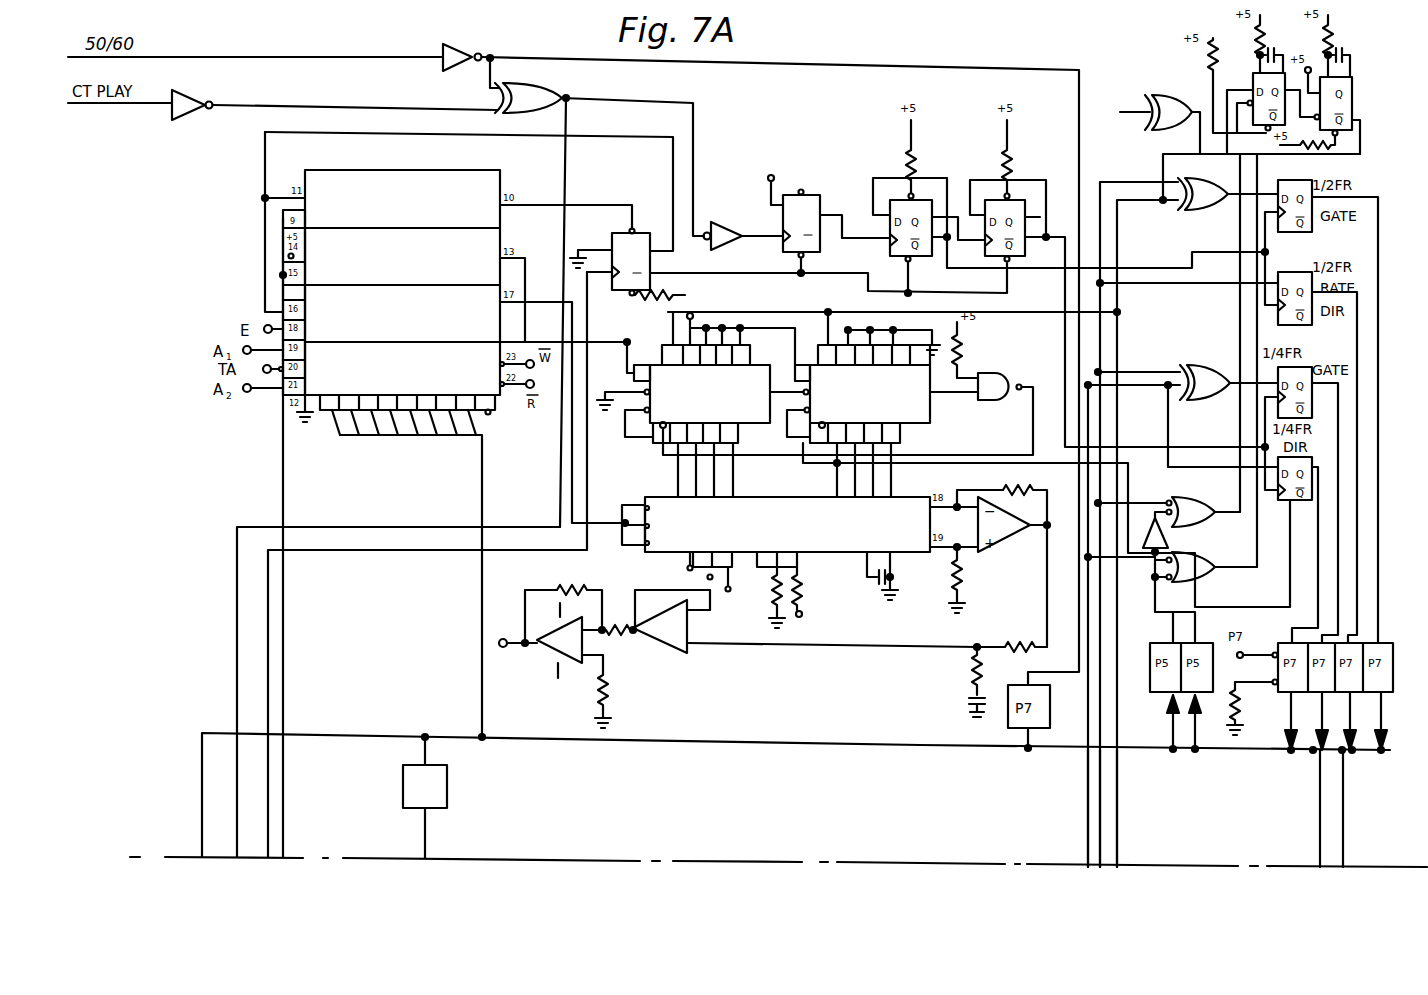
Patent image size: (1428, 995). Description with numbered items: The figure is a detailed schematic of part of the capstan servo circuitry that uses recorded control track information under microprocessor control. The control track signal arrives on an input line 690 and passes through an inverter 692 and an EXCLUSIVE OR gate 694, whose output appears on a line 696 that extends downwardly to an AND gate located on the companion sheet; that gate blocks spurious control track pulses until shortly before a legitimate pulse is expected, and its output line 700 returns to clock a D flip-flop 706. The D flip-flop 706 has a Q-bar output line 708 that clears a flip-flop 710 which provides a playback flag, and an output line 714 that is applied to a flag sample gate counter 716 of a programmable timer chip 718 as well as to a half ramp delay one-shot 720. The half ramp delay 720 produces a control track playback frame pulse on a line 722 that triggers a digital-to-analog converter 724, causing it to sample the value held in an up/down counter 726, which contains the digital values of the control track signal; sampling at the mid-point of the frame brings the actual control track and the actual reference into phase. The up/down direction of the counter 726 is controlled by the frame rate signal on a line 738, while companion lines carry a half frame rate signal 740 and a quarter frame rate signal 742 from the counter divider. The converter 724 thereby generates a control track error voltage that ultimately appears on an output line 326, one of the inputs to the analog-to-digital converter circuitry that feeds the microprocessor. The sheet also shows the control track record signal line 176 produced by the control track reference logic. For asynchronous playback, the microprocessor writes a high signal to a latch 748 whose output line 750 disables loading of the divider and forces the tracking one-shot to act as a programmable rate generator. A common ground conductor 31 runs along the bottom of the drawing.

The control track record signal line 176 is at (1122, 112).
The ground conductor 31 is at (202, 805).
The output line 326 is at (503, 650).
The input line 690 is at (168, 108).
The inverter 692 is at (190, 92).
The EXCLUSIVE OR gate 694 is at (545, 85).
The output line 696 is at (622, 103).
The output line 700 is at (280, 797).
The D flip-flop 706 is at (612, 297).
The Q-bar output line 708 is at (735, 280).
The flip-flop 710 is at (830, 184).
The output line 714 is at (648, 143).
The flag sample gate counter 716 is at (470, 207).
The programmable timer chip 718 is at (430, 166).
The half ramp delay one-shot 720 is at (478, 339).
The output line 722 is at (572, 365).
The digital-to-analog converter 724 is at (660, 556).
The up/down counter 726 is at (663, 432).
The frame rate signal line 738 is at (1117, 808).
The half frame rate signal line 740 is at (1100, 827).
The quarter frame rate signal line 742 is at (1088, 792).
The latch 748 is at (447, 783).
The output line 750 is at (428, 824).